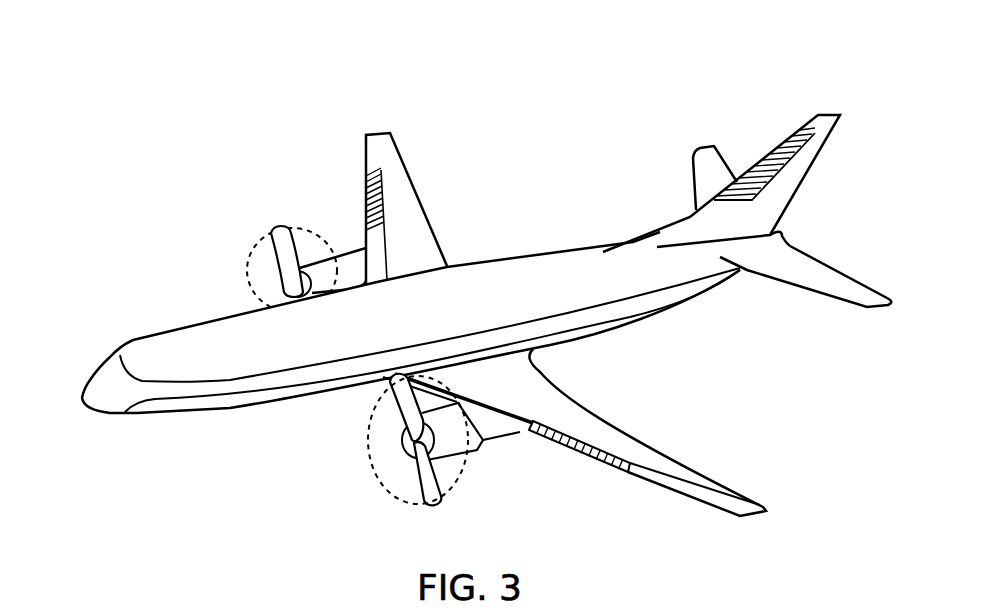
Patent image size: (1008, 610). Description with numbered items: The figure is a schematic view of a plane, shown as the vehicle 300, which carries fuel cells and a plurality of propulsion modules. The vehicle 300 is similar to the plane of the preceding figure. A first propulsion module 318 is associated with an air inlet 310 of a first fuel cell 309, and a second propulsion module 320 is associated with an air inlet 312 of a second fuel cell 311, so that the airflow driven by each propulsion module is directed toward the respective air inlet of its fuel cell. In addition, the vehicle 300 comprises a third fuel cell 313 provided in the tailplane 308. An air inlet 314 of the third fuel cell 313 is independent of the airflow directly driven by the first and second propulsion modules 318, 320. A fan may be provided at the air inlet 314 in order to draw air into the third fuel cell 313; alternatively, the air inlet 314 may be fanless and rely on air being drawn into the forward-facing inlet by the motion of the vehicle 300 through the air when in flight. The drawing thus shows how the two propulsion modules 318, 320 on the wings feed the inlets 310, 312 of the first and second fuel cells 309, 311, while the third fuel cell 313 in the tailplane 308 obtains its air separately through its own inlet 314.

The vehicle 300 is at (143, 180).
The tailplane 308 is at (812, 115).
The first fuel cell 309 is at (398, 195).
The air inlet 310 is at (365, 200).
The second fuel cell 311 is at (592, 432).
The air inlet 312 is at (573, 451).
The third fuel cell 313 is at (778, 183).
The air inlet 314 is at (768, 156).
The first propulsion module 318 is at (347, 250).
The second propulsion module 320 is at (472, 453).